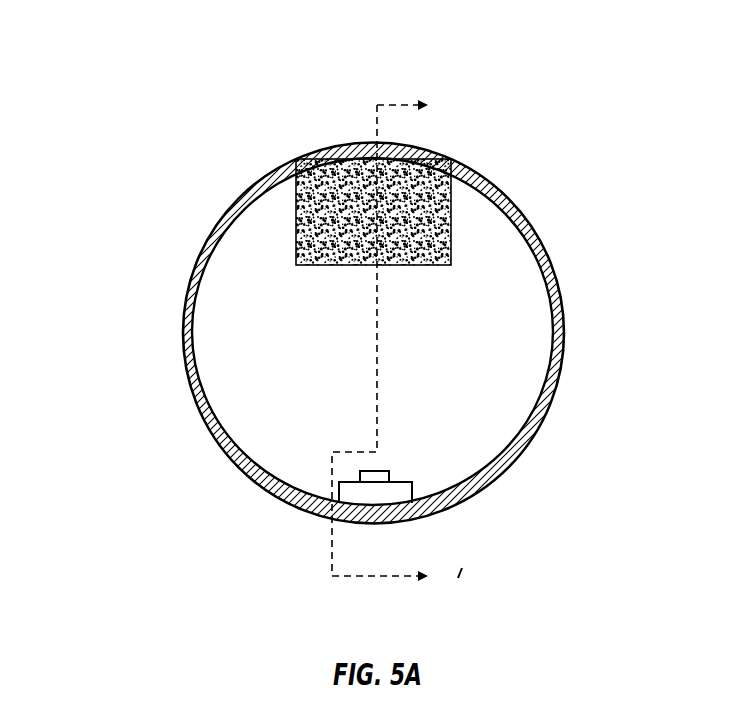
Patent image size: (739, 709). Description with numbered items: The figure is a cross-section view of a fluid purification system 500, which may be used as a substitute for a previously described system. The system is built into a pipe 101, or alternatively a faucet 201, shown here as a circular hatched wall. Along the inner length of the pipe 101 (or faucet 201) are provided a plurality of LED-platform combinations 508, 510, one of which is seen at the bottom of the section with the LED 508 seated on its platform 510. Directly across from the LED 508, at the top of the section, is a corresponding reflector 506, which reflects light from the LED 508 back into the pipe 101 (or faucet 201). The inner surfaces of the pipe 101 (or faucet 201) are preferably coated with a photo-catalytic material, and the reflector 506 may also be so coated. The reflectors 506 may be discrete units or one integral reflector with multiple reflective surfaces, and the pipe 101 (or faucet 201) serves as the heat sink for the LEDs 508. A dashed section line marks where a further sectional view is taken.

The fluid purification system 500 is at (153, 49).
The pipe 101 is at (383, 333).
The faucet 201 is at (470, 167).
The reflector 506 is at (304, 266).
The LED 508 is at (376, 470).
The platform 510 is at (397, 497).